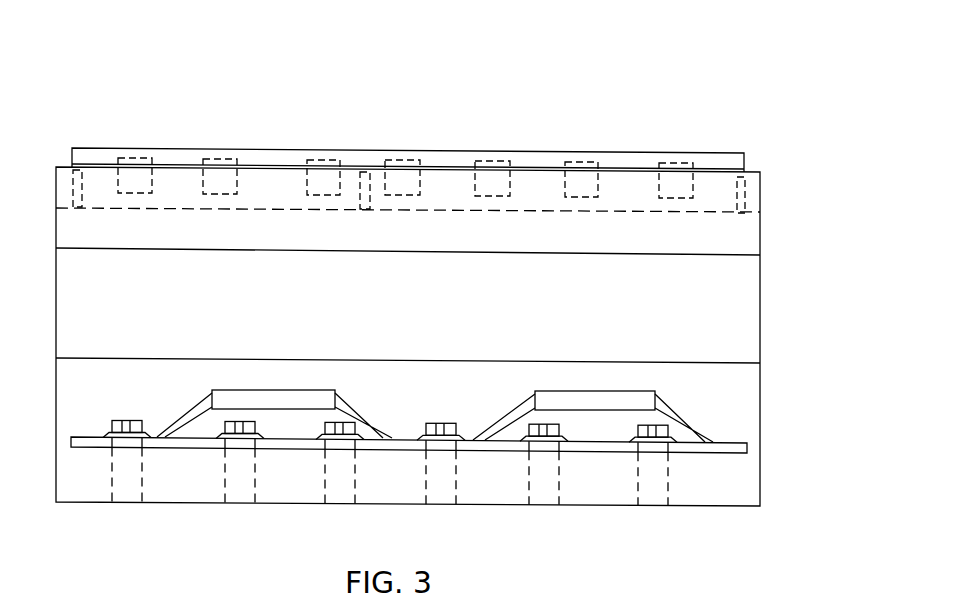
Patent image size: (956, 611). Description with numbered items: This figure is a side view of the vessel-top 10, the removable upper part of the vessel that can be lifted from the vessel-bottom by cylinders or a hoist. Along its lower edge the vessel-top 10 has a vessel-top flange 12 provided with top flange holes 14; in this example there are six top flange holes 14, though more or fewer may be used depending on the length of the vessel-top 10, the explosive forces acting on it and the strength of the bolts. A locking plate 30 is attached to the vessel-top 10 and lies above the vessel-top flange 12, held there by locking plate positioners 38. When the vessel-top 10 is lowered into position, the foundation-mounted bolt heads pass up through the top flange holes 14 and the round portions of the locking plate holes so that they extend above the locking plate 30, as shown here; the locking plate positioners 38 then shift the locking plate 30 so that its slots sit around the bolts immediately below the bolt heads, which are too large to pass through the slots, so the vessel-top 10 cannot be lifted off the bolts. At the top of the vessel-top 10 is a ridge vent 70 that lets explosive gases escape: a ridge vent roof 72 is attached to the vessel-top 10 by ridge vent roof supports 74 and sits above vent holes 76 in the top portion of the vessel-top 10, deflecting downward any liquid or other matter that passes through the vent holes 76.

The vessel-top 10 is at (781, 96).
The vessel-top flange 12 is at (725, 508).
The top flange holes 14 is at (123, 490).
The locking plate 30 is at (732, 442).
The locking plate positioners 38 is at (273, 390).
The ridge vent 70 is at (487, 104).
The ridge vent roof 72 is at (132, 148).
The ridge vent roof supports 74 is at (82, 185).
The vent holes 76 is at (152, 183).